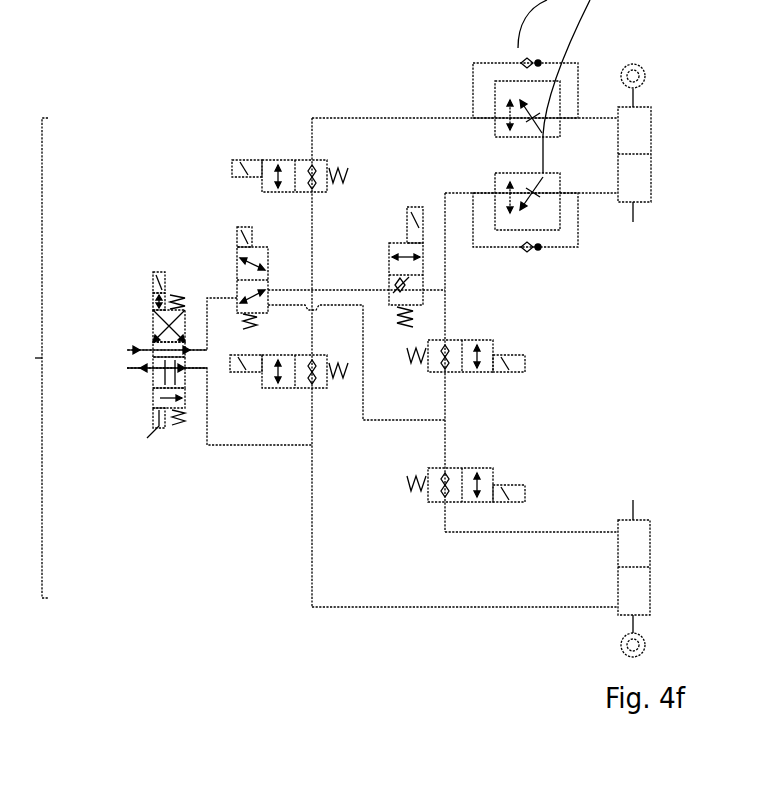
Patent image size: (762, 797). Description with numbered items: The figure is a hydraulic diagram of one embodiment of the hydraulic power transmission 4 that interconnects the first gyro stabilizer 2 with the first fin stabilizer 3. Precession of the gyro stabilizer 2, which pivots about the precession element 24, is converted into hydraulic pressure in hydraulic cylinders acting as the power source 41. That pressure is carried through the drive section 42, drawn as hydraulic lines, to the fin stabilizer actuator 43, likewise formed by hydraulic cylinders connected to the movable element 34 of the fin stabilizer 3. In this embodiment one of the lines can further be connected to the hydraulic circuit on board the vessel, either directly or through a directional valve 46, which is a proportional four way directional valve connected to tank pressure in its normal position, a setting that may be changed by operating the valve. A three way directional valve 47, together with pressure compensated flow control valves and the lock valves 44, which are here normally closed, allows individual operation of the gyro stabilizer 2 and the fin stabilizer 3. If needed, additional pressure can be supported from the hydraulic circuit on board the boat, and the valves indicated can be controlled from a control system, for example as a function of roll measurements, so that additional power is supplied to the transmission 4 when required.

The hydraulic power transmission 4 is at (28, 358).
The lock valves 44 is at (468, 343).
The directional valve 46 is at (150, 322).
The three way directional valve 47 is at (237, 265).
The power source 41 is at (649, 155).
The fin stabilizer actuator 43 is at (651, 566).
The drive section 42 is at (567, 532).
The first gyro stabilizer 2 is at (663, 76).
The precession element 24 is at (663, 76).
The first fin stabilizer 3 is at (663, 645).
The movable element 34 is at (663, 645).